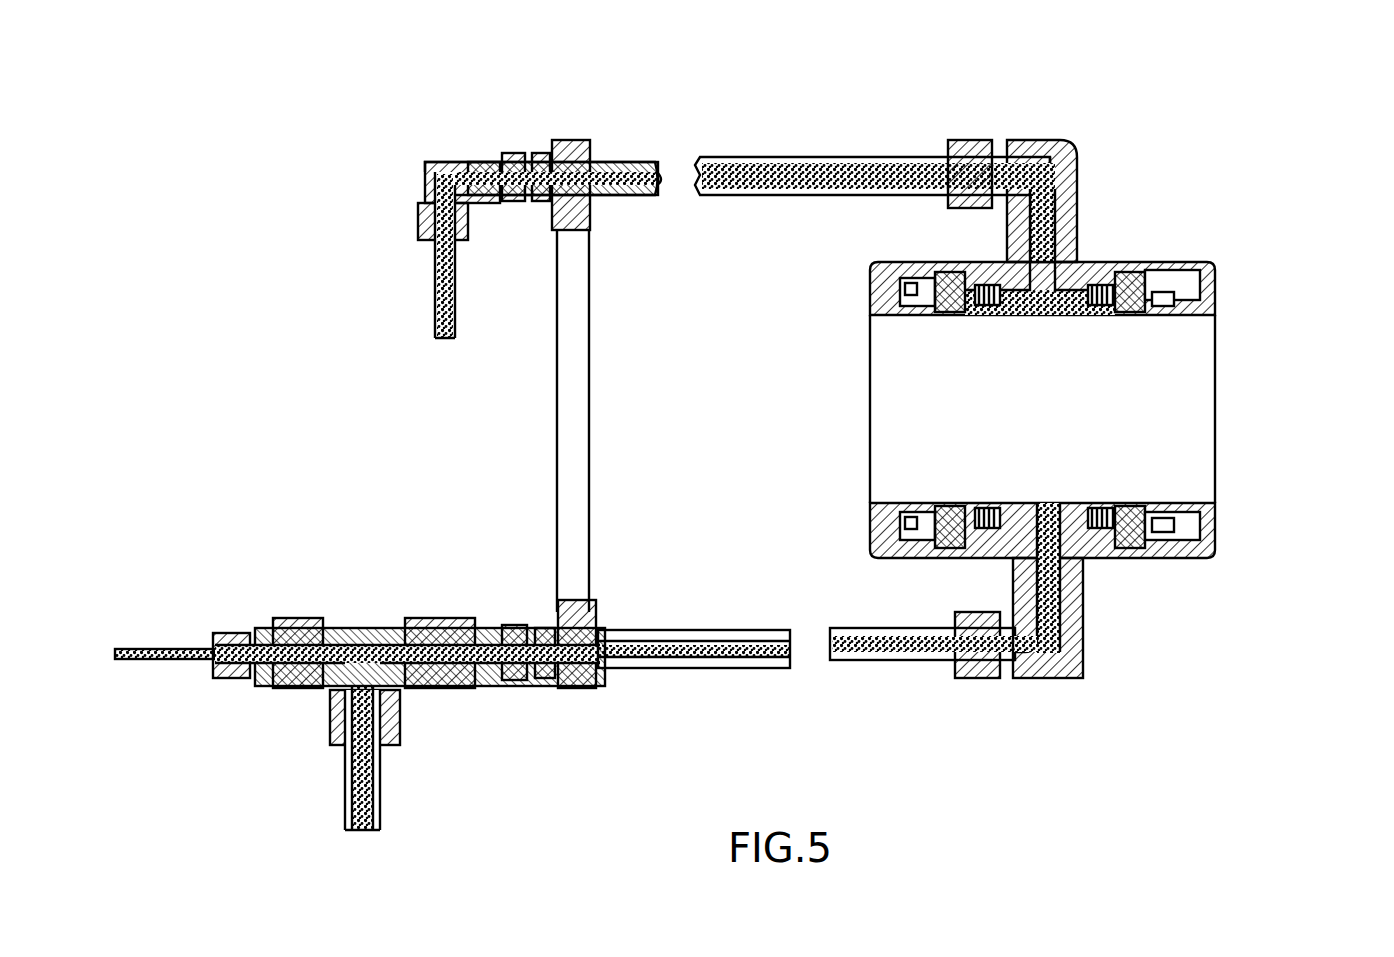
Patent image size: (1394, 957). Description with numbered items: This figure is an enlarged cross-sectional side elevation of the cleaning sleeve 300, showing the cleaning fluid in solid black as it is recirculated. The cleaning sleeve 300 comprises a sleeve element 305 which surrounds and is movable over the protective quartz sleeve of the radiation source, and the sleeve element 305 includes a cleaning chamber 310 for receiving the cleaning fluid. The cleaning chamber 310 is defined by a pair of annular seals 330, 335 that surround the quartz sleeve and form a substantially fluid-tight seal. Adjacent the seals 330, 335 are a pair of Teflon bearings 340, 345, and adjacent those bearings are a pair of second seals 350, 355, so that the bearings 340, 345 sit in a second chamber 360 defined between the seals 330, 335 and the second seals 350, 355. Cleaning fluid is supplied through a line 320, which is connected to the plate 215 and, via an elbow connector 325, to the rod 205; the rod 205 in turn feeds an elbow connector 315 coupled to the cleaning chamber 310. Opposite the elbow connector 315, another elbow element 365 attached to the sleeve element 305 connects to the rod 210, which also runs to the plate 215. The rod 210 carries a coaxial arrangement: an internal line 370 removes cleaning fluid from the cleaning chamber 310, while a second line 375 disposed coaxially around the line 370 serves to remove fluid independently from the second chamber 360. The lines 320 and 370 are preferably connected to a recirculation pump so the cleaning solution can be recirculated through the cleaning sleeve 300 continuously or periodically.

The rod 205 is at (830, 157).
The rod 210 is at (727, 665).
The plate 215 is at (570, 392).
The cleaning sleeve 300 is at (1105, 252).
The sleeve element 305 is at (1110, 560).
The cleaning chamber 310 is at (1050, 318).
The elbow connector 315 is at (1060, 148).
The line 320 is at (441, 268).
The elbow connector 325 is at (432, 162).
The seal 330 is at (990, 290).
The seal 335 is at (1110, 315).
The Teflon bearing 340 is at (960, 290).
The Teflon bearing 345 is at (1130, 280).
The second seal 350 is at (927, 318).
The second seal 355 is at (1168, 315).
The second chamber 360 is at (977, 500).
The elbow element 365 is at (1063, 665).
The internal line 370 is at (167, 655).
The second line 375 is at (700, 628).